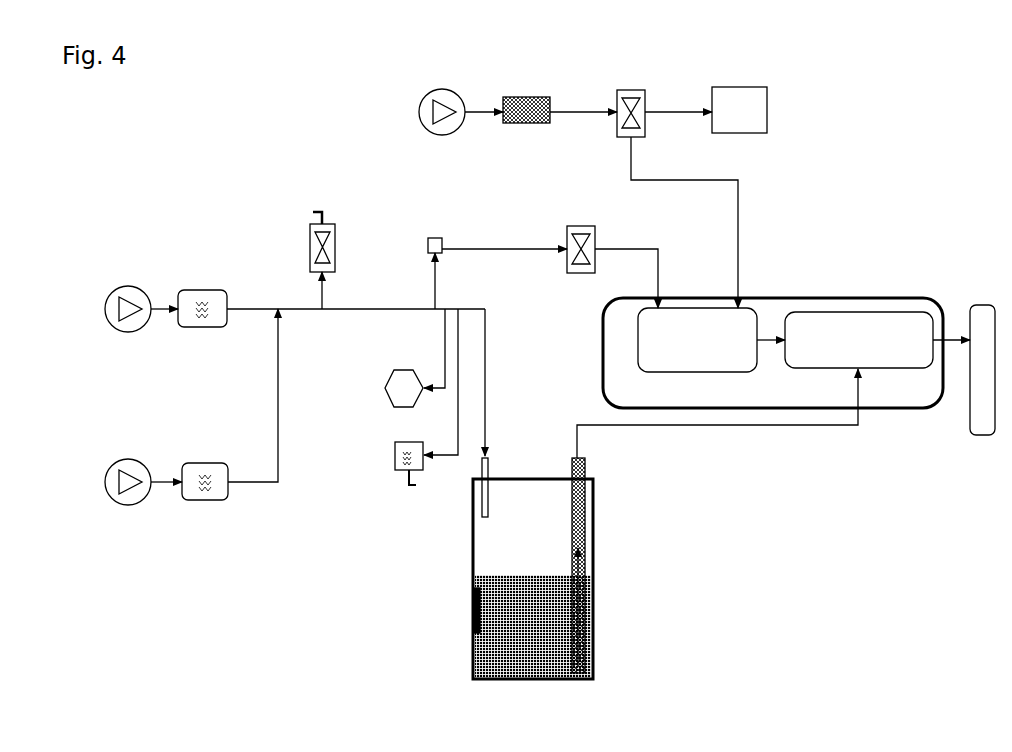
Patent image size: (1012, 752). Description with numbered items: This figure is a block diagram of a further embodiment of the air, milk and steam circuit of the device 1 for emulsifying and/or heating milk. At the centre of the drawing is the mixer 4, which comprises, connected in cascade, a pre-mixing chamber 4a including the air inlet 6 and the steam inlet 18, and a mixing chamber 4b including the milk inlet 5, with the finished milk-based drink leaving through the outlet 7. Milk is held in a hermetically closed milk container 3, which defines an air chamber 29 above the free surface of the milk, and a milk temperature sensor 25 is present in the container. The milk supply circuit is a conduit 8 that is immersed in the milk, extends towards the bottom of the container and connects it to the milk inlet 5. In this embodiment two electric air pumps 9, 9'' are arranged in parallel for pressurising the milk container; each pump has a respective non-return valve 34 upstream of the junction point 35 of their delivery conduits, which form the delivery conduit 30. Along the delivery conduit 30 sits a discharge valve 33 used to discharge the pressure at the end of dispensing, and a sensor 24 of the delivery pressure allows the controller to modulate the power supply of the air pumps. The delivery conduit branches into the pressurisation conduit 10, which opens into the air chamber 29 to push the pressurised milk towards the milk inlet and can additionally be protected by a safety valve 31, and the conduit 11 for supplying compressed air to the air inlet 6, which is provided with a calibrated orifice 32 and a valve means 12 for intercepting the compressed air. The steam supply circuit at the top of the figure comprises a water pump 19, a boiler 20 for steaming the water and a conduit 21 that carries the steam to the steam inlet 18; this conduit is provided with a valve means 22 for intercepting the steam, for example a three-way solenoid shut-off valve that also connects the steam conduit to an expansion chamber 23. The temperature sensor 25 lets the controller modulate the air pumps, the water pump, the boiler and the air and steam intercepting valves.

The device for emulsifying and/or heating milk 1 is at (366, 556).
The milk container 3 is at (470, 661).
The mixer 4 is at (870, 409).
The pre-mixing chamber 4a is at (720, 371).
The mixing chamber 4b is at (865, 298).
The milk inlet 5 is at (866, 374).
The air inlet 6 is at (662, 297).
The outlet 7 is at (950, 305).
The conduit 8 is at (585, 618).
The air pump 9 is at (106, 293).
The air pump 9'' is at (104, 469).
The pressurisation conduit 10 is at (487, 388).
The conduit for supplying compressed air 11 is at (504, 253).
The valve means for intercepting the compressed air 12 is at (582, 225).
The steam inlet 18 is at (745, 296).
The water pump 19 is at (430, 92).
The boiler 20 is at (528, 95).
The conduit for supplying steam 21 is at (740, 188).
The valve means for intercepting the steam 22 is at (630, 88).
The expansion chamber 23 is at (735, 86).
The sensor of the delivery pressure 24 is at (392, 372).
The milk temperature sensor 25 is at (470, 604).
The air chamber 29 is at (533, 612).
The delivery conduit 30 is at (305, 308).
The safety valve 31 is at (393, 450).
The calibrated orifice 32 is at (441, 236).
The discharge valve 33 is at (308, 247).
The non-return valve 34 is at (205, 328).
The junction point 35 is at (275, 313).